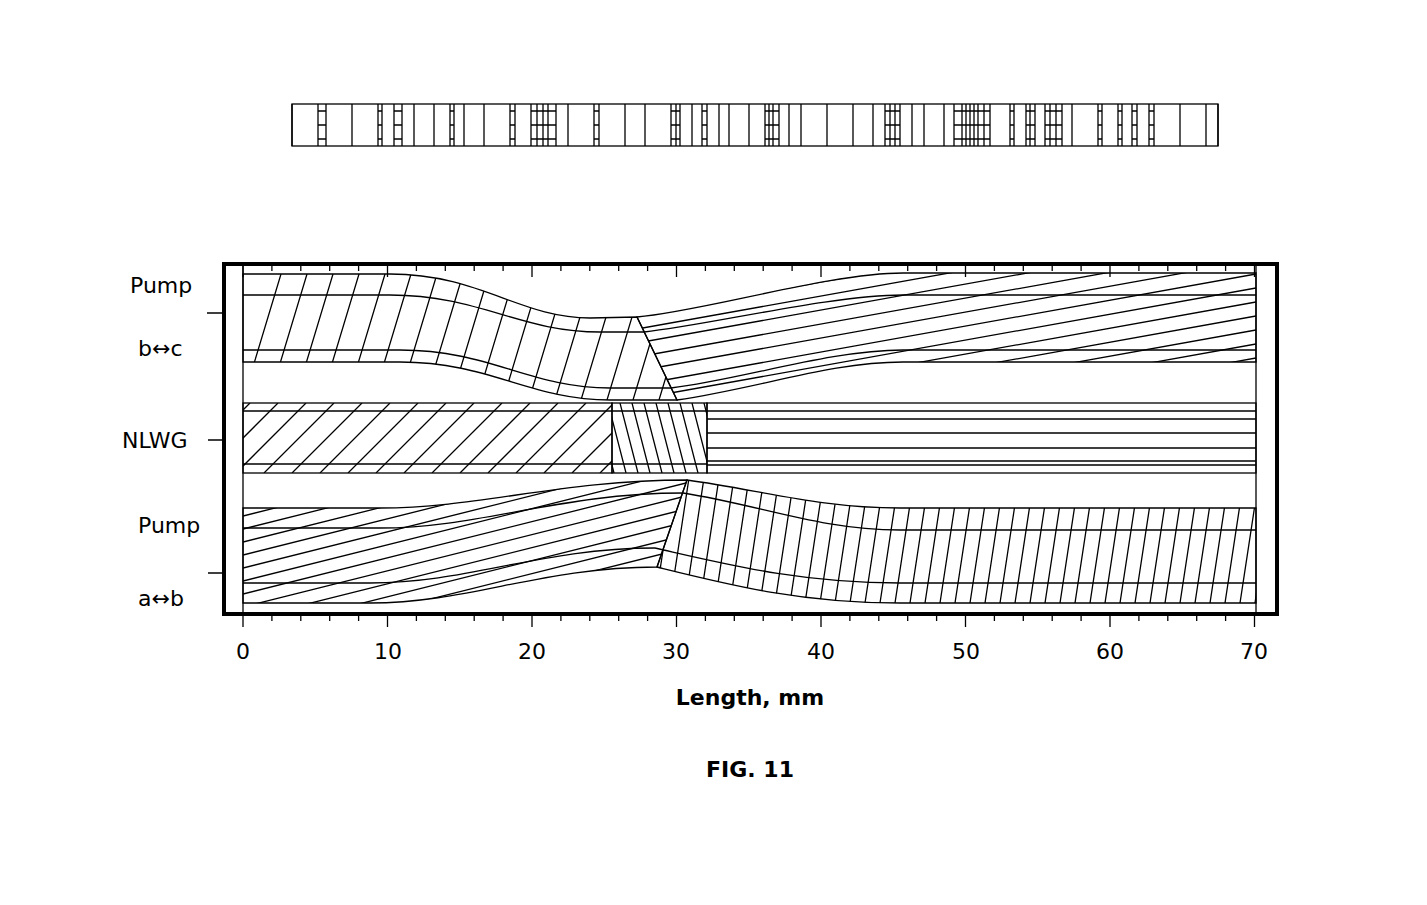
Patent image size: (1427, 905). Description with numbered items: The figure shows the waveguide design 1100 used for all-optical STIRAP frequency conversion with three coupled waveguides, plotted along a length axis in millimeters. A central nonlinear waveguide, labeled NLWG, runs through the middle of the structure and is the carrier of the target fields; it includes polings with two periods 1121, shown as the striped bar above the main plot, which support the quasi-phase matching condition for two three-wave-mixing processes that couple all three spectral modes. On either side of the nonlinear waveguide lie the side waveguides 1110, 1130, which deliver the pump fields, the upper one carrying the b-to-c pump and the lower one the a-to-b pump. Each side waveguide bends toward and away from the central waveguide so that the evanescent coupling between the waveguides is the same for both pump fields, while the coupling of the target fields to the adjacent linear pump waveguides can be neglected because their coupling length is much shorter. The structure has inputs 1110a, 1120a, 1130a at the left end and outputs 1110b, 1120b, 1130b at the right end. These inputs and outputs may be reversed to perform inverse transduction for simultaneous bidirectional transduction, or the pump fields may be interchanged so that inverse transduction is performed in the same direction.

The waveguide design 1100 is at (221, 47).
The polings with two periods 1121 is at (915, 103).
The side waveguide 1110 is at (740, 343).
The input of side waveguide 1110a is at (243, 340).
The output of side waveguide 1110b is at (1256, 340).
The input of nonlinear waveguide 1120a is at (243, 423).
The output of nonlinear waveguide 1120b is at (1256, 455).
The side waveguide 1130 is at (715, 551).
The input of side waveguide 1130a is at (243, 575).
The output of side waveguide 1130b is at (1256, 582).